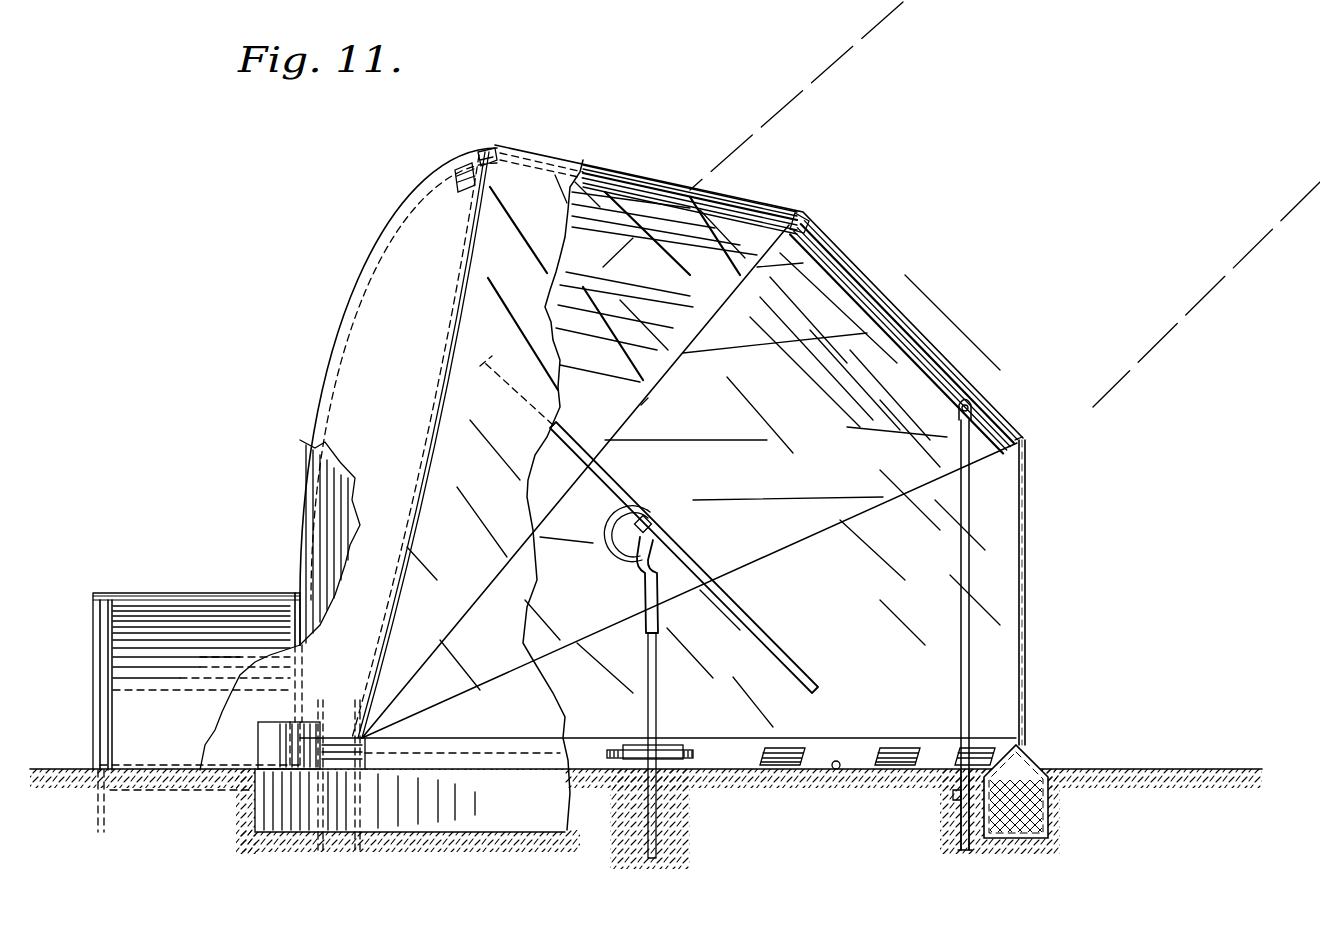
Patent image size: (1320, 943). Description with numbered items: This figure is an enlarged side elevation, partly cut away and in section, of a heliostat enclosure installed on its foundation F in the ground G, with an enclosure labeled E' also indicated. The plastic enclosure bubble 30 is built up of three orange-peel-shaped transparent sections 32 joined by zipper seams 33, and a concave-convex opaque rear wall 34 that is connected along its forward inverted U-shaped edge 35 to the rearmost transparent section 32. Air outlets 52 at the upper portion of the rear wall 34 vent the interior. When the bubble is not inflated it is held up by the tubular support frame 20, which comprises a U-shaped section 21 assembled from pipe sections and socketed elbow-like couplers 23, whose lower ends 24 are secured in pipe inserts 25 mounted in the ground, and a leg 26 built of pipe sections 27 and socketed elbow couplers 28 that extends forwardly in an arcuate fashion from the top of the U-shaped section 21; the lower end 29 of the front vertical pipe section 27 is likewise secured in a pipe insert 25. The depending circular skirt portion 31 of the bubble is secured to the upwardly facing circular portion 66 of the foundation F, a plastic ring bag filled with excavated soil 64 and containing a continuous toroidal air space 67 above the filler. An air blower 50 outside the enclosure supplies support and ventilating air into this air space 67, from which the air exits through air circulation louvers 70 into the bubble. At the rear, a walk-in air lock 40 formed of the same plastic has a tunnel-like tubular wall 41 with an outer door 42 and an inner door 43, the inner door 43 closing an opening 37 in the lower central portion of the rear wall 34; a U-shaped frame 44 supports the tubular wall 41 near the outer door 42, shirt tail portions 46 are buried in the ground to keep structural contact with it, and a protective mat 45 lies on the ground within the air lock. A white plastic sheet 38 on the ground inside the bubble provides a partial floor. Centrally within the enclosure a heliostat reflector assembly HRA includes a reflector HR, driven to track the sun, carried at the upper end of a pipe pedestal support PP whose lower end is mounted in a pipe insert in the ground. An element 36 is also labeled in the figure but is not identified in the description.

The bubble support frame 20 is at (696, 451).
The U-shaped section 21 is at (767, 378).
The socketed elbow-like couplers 23 is at (484, 160).
The lower ends of U-shaped section 24 is at (462, 753).
The pipe inserts 25 is at (107, 807).
The leg section 26 is at (953, 459).
The pipe sections 27 is at (922, 365).
The socketed elbow couplers 28 is at (975, 420).
The lower end of front vertical section 29 is at (967, 795).
The plastic enclosure bubble 30 is at (328, 350).
The depending circular skirt portion 31 is at (1013, 728).
The transparent sections 32 is at (645, 170).
The zipper seams 33 is at (800, 212).
The rear wall 34 is at (385, 288).
The forward inverted U-shaped edge 35 is at (475, 253).
The inner arch rib 36 is at (445, 445).
The opening 37 is at (283, 633).
The white plastic sheet 38 is at (493, 760).
The walk-in air lock 40 is at (130, 592).
The tunnel-like tubular wall 41 is at (195, 595).
The outer door 42 is at (93, 693).
The inner door 43 is at (297, 617).
The U-shaped frame 44 is at (110, 637).
The protective mat 45 is at (153, 763).
The shirt tail portions 46 is at (128, 792).
The air blower 50 is at (262, 722).
The air outlets 52 is at (456, 178).
The soil 64 is at (1027, 840).
The upwardly facing circular portion 66 is at (1013, 742).
The toroidal air space 67 is at (1020, 758).
The air circulation louvers 70 is at (767, 745).
The continuous enclosure E' is at (1026, 482).
The foundation F is at (1049, 758).
The ground G is at (1217, 773).
The reflector HR is at (778, 648).
The heliostat reflector assembly HRA is at (640, 590).
The pipe pedestal support PP is at (647, 703).